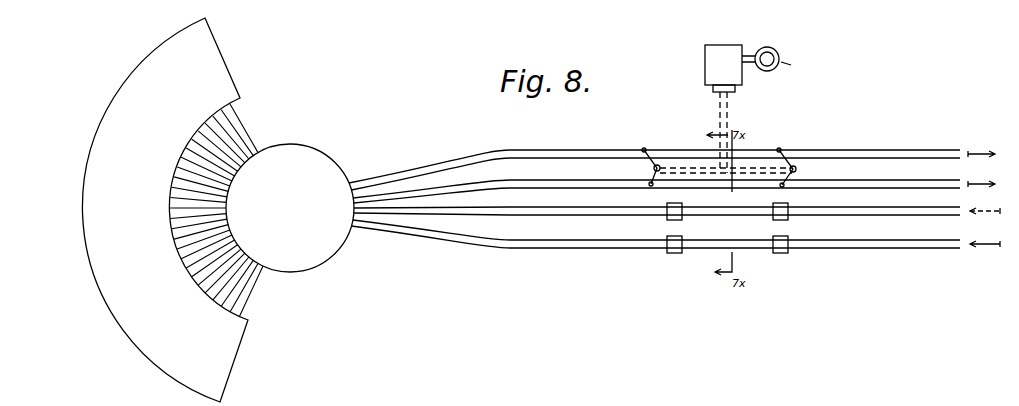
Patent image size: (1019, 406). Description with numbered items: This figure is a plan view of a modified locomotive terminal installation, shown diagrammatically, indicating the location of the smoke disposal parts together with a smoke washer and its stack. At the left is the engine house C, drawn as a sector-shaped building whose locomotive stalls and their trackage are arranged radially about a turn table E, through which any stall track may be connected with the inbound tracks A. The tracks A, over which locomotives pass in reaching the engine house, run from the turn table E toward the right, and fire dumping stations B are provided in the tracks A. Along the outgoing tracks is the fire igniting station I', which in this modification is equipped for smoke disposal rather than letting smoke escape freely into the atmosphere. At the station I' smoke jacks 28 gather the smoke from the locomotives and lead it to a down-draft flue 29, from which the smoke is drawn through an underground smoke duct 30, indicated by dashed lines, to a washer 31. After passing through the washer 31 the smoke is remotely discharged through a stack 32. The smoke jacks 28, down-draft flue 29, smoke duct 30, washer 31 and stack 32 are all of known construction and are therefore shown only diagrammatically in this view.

The engine house C is at (81, 196).
The turn table E is at (322, 257).
The fire igniting station I' is at (672, 176).
The tracks A is at (907, 240).
The fire dumping stations B is at (773, 240).
The smoke jacks 28 is at (645, 160).
The down-draft flue 29 is at (659, 165).
The underground smoke duct 30 is at (729, 130).
The smoke washer 31 is at (698, 70).
The stack 32 is at (780, 56).